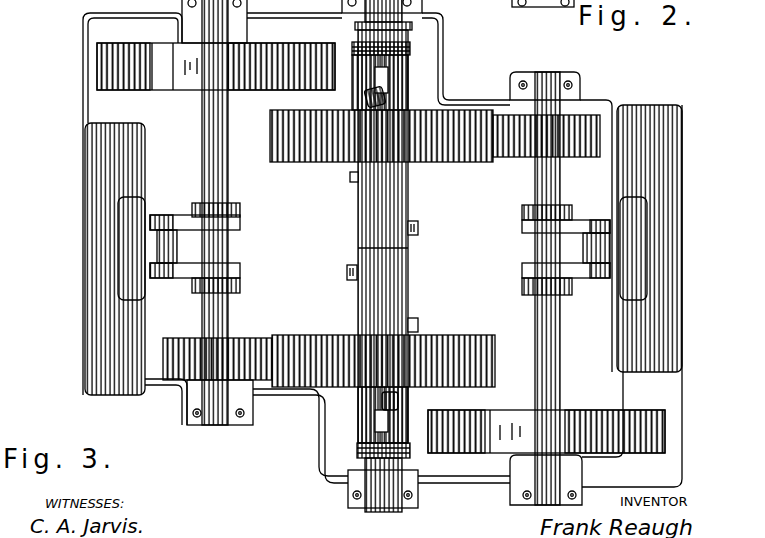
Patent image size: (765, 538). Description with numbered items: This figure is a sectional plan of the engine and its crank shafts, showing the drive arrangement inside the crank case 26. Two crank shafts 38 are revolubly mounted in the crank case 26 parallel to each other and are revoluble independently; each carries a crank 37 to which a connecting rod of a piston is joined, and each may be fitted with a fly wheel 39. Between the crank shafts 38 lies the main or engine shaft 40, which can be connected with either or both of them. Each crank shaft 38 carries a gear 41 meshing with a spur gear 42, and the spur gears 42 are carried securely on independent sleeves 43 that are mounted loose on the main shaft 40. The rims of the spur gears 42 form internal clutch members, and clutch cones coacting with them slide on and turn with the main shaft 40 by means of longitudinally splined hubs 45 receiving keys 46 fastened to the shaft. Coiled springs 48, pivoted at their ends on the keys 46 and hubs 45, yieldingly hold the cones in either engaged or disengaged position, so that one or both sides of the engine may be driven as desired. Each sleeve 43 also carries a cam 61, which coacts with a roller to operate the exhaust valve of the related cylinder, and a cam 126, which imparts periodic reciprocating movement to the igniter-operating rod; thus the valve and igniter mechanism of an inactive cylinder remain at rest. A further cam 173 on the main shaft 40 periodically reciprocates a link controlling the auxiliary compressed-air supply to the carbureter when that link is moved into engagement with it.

The crank case 26 is at (668, 165).
The crank 37 is at (188, 222).
The crank shaft 38 is at (228, 177).
The fly wheel 39 is at (133, 78).
The main or engine shaft 40 is at (385, 492).
The gear 41 is at (565, 158).
The spur gear 42 is at (300, 163).
The sleeve 43 is at (408, 180).
The splined hub 45 is at (397, 68).
The key 46 is at (383, 80).
The coiled spring 48 is at (364, 97).
The cam 61 is at (418, 229).
The cam 126 is at (355, 183).
The cam 173 is at (413, 27).